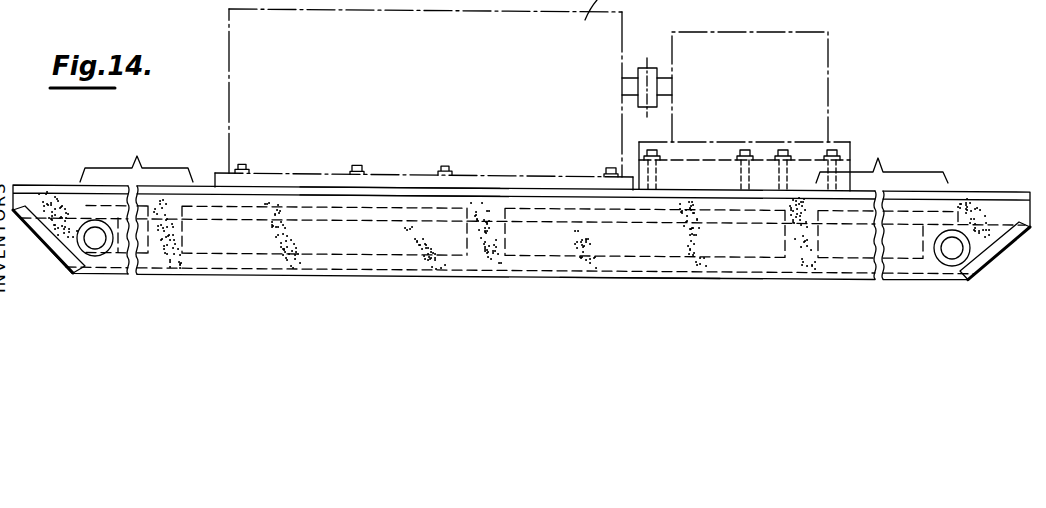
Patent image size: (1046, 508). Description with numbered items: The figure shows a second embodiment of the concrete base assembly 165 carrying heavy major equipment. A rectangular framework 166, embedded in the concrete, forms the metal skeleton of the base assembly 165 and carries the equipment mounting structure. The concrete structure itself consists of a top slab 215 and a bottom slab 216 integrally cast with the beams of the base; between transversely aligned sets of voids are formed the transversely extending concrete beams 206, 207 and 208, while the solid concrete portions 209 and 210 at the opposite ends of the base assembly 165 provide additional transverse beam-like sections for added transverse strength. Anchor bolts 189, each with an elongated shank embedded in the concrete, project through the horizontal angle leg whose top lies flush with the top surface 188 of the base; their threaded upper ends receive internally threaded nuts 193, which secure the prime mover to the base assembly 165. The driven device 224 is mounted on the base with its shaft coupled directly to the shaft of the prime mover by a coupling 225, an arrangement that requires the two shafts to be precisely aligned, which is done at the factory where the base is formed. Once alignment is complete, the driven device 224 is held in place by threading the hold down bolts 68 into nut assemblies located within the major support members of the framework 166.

The hold down bolts 68 is at (832, 150).
The base assembly 165 is at (203, 182).
The rectangular framework 166 is at (33, 184).
The top surface 188 is at (326, 187).
The anchor bolts 189 is at (242, 164).
The nuts 193 is at (360, 163).
The transversely extending concrete beam 206 is at (165, 230).
The transversely extending beam 207 is at (487, 235).
The transversely extending beam 208 is at (803, 242).
The solid concrete portion 209 is at (72, 203).
The solid concrete portion 210 is at (997, 223).
The slab 215 is at (420, 202).
The slab 216 is at (640, 265).
The driven device 224 is at (822, 47).
The coupling 225 is at (652, 72).